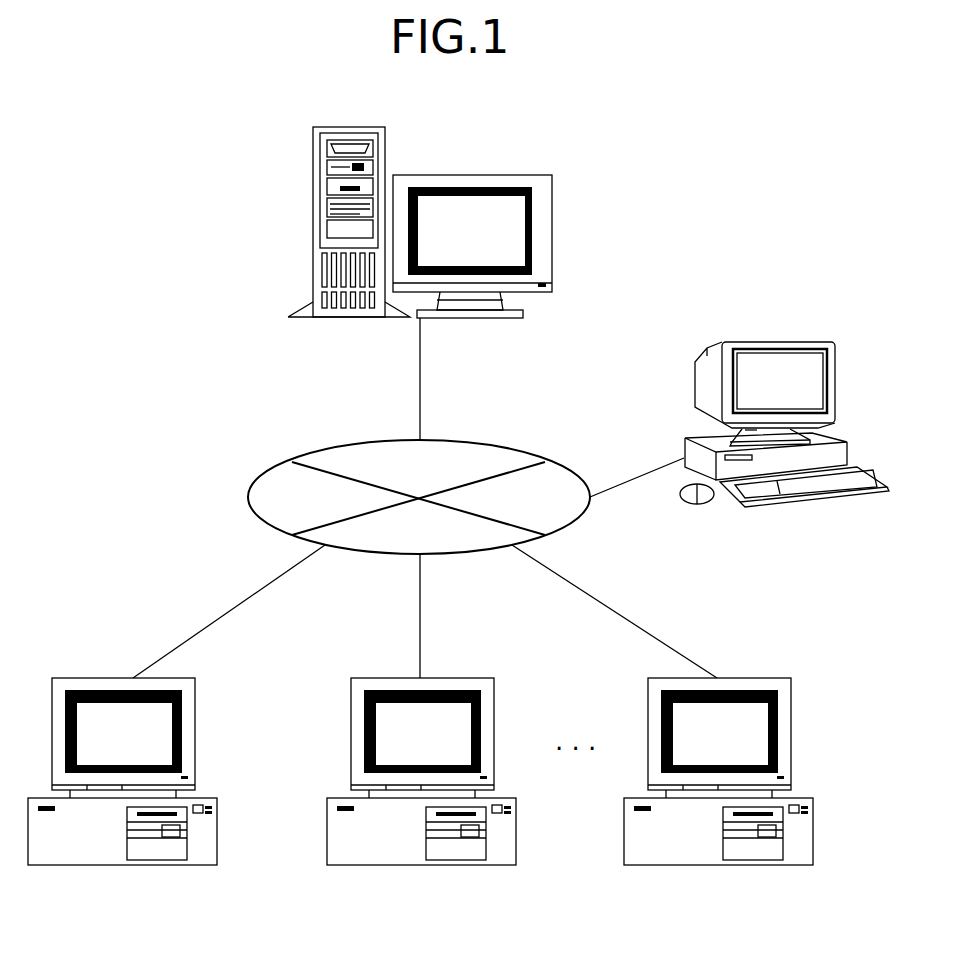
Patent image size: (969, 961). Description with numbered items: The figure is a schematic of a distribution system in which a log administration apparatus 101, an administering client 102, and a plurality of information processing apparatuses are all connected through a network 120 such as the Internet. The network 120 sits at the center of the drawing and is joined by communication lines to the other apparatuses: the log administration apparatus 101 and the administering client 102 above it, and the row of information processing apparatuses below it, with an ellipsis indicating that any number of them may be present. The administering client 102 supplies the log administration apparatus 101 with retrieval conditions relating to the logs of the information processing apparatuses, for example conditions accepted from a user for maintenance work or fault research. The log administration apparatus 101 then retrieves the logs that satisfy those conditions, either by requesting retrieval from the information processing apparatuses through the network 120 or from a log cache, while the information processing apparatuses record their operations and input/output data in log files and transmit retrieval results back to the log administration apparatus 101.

The log administration apparatus 101 is at (516, 175).
The administering client 102 is at (808, 341).
The network 120 is at (524, 452).